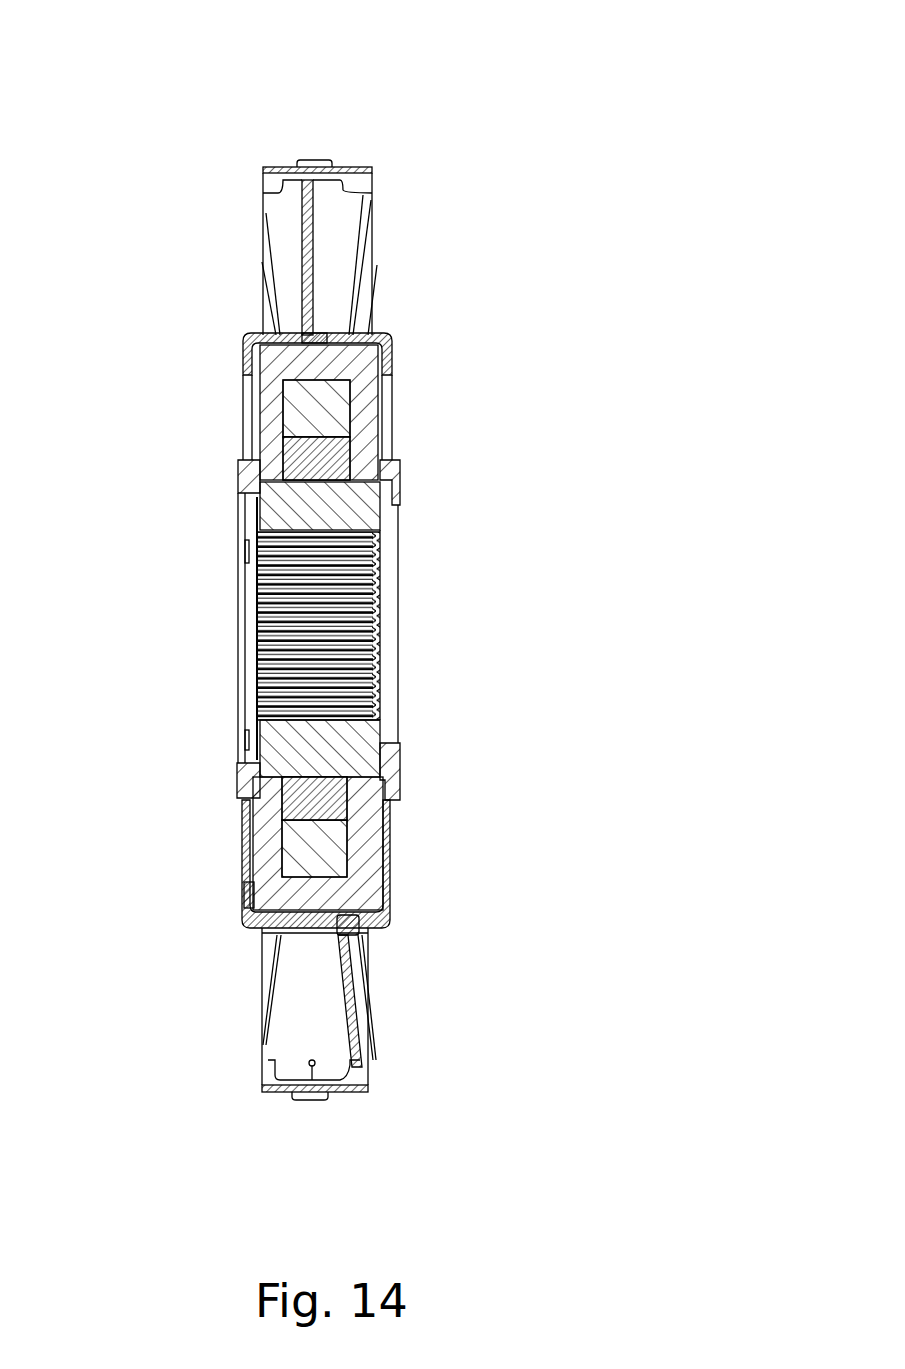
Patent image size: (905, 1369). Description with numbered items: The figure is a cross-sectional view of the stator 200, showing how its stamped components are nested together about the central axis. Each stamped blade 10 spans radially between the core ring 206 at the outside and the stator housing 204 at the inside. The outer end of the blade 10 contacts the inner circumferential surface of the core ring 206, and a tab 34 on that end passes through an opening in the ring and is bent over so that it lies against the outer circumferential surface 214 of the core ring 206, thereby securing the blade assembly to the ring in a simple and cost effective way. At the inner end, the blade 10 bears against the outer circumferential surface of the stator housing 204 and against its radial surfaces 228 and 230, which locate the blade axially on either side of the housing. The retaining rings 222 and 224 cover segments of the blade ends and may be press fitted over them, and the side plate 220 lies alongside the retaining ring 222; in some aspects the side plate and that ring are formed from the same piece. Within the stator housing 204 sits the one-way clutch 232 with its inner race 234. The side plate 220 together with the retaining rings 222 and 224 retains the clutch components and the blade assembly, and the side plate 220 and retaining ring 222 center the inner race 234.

The stator 200 is at (453, 140).
The stamped blade 10 is at (285, 223).
The core ring 206 is at (277, 160).
The tab 34 is at (315, 158).
The retaining ring 222 is at (242, 355).
The radial surface 228 is at (388, 395).
The stator housing 204 is at (395, 478).
The one-way clutch 232 is at (383, 533).
The inner race 234 is at (350, 740).
The side plate 220 is at (238, 782).
The retaining ring 224 is at (388, 895).
The radial surface 230 is at (248, 903).
The outer circumferential surface 214 is at (355, 1095).